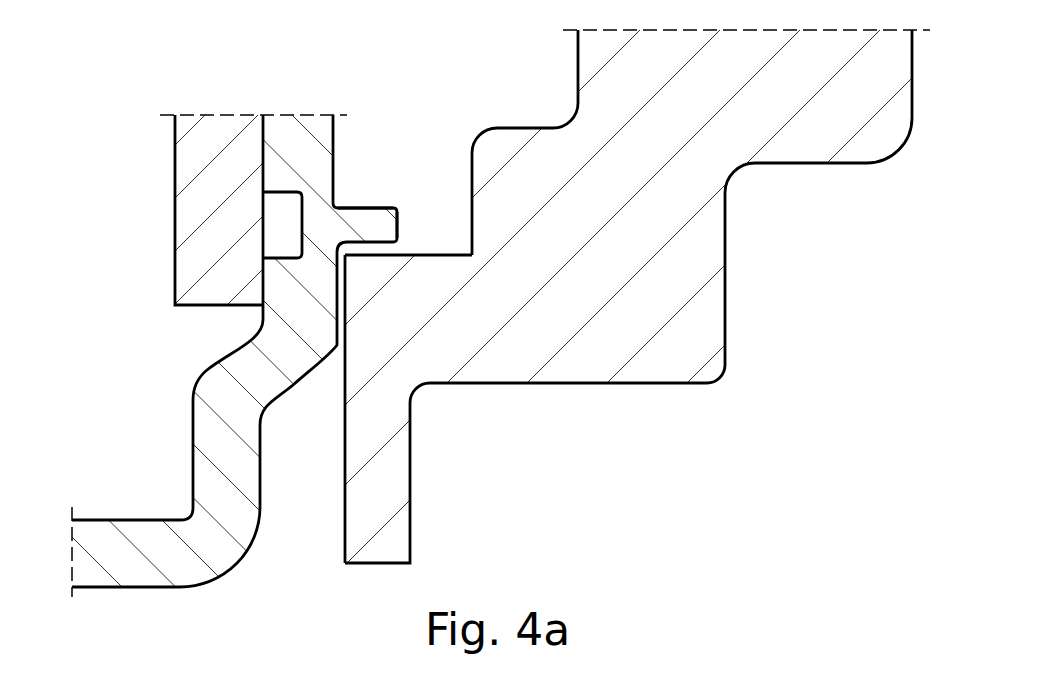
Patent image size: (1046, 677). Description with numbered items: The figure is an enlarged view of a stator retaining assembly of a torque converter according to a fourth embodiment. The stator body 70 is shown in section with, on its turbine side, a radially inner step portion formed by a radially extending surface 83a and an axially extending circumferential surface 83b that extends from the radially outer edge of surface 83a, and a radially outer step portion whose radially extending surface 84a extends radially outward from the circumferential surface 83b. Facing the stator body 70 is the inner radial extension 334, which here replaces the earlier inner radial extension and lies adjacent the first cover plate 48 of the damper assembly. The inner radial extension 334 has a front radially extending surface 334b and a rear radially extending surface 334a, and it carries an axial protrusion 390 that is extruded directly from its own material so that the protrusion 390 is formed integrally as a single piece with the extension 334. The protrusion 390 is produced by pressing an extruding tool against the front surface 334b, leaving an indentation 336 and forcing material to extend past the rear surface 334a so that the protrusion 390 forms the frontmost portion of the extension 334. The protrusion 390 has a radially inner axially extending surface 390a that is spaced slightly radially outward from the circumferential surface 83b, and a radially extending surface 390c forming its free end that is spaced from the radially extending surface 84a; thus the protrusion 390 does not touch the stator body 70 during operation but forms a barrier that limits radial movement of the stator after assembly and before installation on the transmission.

The first cover plate 48 is at (192, 203).
The stator body 70 is at (655, 166).
The radially extending surface 83a is at (347, 505).
The axially extending circumferential surface 83b is at (453, 257).
The radially extending surface 84a is at (473, 183).
The inner radial extension 334 is at (280, 147).
The rear radially extending surface 334a is at (334, 135).
The front radially extending surface 334b is at (263, 135).
The indentation 336 is at (287, 235).
The axial protrusion 390 is at (365, 226).
The radially inner axially extending surface 390a is at (350, 207).
The radially extending surface 390c is at (405, 230).